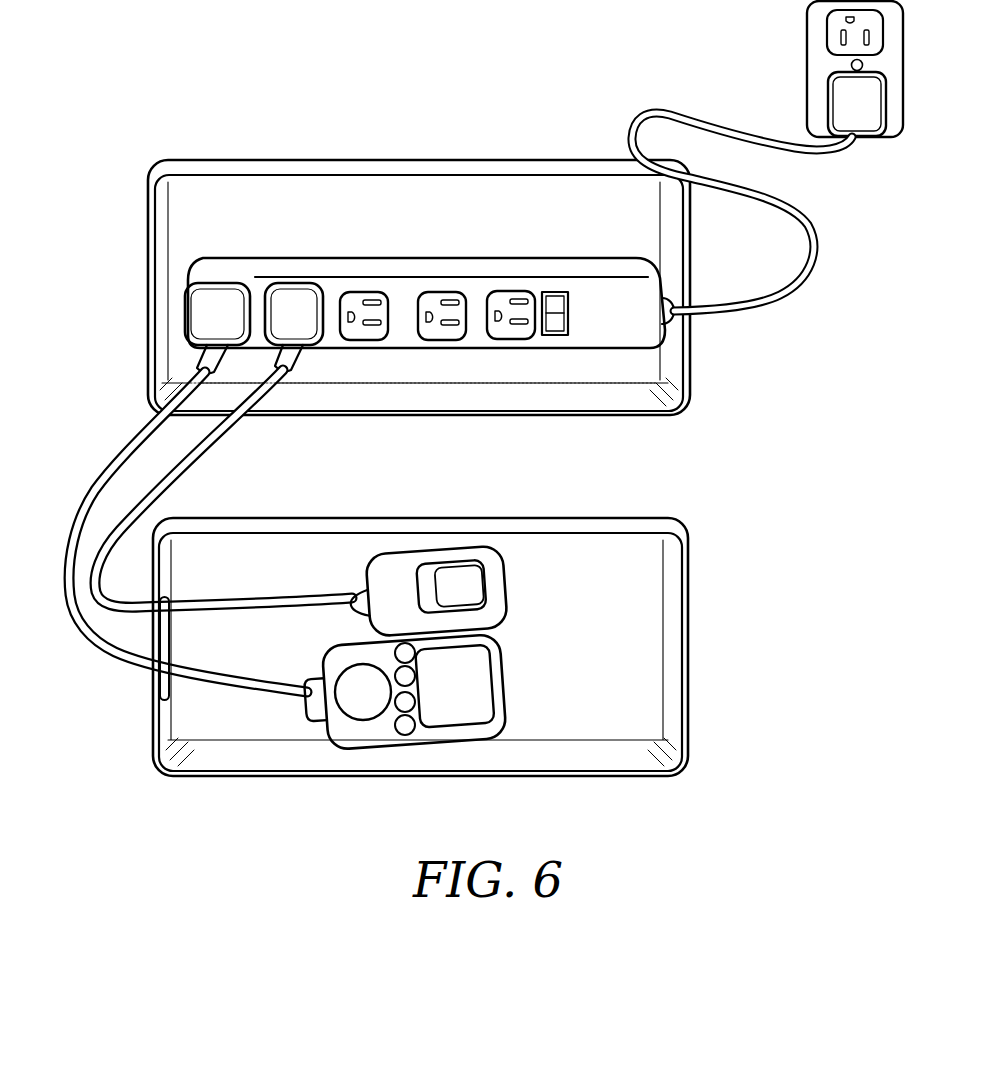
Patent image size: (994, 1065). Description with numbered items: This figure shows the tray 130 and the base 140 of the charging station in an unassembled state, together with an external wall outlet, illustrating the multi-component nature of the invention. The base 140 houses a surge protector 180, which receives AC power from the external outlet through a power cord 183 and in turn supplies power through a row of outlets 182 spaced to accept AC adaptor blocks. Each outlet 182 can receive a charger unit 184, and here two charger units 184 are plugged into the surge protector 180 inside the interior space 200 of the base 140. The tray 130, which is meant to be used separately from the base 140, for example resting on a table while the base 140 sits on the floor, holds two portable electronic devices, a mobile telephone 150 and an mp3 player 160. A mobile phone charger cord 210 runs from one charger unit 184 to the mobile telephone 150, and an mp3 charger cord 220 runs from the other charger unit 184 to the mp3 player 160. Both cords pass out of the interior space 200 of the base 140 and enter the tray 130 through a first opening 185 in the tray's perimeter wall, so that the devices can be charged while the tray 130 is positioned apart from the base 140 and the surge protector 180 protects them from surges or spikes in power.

The tray 130 is at (595, 652).
The base 140 is at (483, 223).
The mobile telephone 150 is at (490, 584).
The mp3 player 160 is at (495, 706).
The surge protector 180 is at (608, 335).
The outlet 182 is at (512, 340).
The power cord 183 is at (805, 262).
The charger unit 184 is at (226, 305).
The first opening 185 is at (158, 702).
The interior space 200 is at (418, 370).
The mobile phone charger cord 210 is at (200, 456).
The mp3 charger cord 220 is at (128, 462).